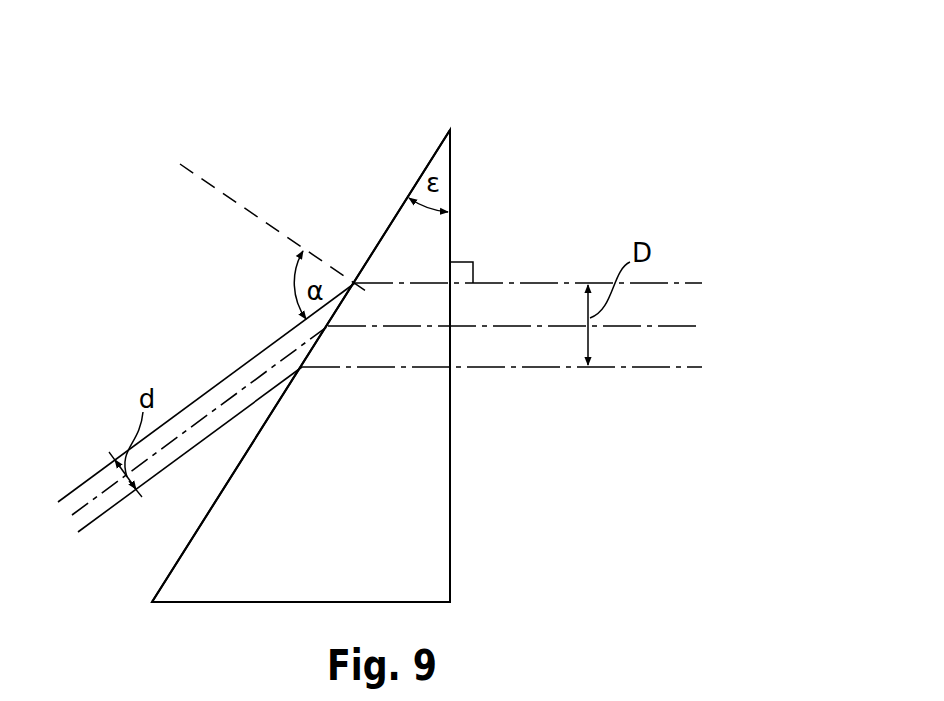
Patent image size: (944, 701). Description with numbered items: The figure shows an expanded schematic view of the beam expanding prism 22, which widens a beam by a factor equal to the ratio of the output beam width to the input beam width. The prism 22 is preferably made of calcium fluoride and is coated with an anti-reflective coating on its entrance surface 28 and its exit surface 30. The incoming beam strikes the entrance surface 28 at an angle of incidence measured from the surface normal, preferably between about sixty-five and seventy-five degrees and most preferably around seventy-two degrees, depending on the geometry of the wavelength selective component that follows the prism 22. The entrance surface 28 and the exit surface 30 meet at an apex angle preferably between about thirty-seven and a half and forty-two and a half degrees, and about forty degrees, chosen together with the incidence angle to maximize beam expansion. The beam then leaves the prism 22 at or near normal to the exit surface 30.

The beam expanding prism 22 is at (450, 97).
The entrance surface 28 is at (389, 221).
The exit surface 30 is at (456, 217).